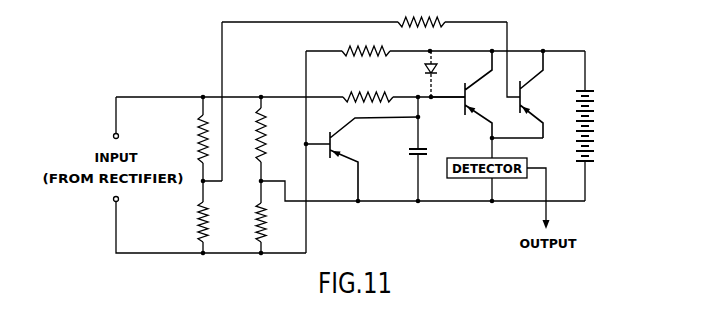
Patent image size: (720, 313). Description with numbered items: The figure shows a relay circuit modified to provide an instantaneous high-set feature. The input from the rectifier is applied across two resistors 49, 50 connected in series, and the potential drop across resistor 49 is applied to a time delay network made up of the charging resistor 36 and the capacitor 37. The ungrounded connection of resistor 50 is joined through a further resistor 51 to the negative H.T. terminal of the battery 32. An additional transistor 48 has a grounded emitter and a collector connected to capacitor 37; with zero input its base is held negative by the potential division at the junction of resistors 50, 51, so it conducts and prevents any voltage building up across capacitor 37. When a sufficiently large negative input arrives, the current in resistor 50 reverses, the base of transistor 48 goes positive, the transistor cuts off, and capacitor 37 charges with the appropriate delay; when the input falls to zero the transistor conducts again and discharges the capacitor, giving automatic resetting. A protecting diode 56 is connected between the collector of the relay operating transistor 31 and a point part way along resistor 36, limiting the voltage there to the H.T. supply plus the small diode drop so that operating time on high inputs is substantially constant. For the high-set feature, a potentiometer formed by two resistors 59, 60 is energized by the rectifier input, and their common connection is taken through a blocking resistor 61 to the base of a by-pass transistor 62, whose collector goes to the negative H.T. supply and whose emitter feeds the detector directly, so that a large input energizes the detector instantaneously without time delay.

The blocking resistor 61 is at (430, 15).
The resistor 51 is at (376, 43).
The resistor 36 is at (376, 87).
The protecting diode 56 is at (458, 75).
The resistor 59 is at (193, 146).
The resistor 60 is at (193, 230).
The resistor 49 is at (286, 148).
The resistor 50 is at (288, 231).
The transistor 48 is at (347, 178).
The capacitor 37 is at (403, 163).
The transistor 31 is at (490, 105).
The transistor 62 is at (550, 105).
The battery 32 is at (622, 133).